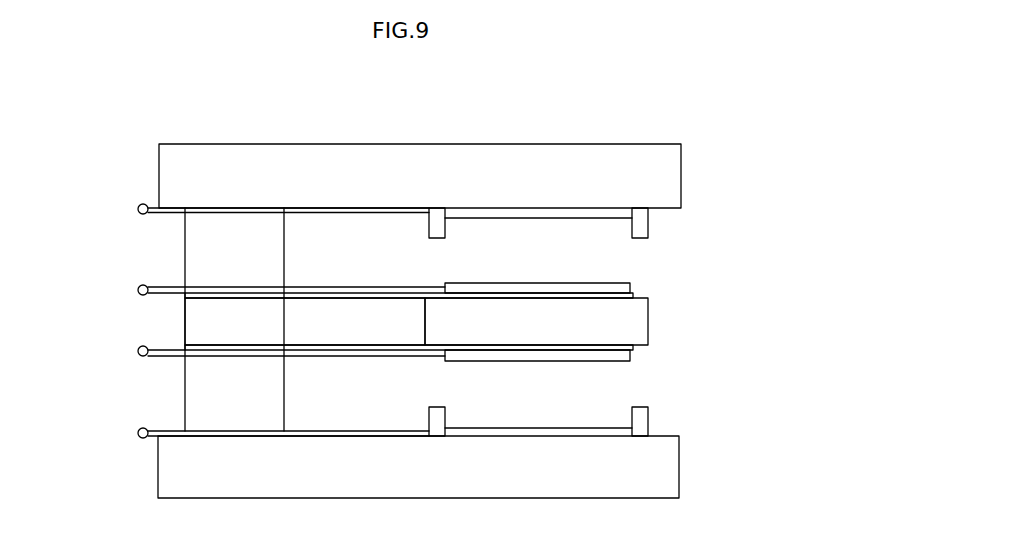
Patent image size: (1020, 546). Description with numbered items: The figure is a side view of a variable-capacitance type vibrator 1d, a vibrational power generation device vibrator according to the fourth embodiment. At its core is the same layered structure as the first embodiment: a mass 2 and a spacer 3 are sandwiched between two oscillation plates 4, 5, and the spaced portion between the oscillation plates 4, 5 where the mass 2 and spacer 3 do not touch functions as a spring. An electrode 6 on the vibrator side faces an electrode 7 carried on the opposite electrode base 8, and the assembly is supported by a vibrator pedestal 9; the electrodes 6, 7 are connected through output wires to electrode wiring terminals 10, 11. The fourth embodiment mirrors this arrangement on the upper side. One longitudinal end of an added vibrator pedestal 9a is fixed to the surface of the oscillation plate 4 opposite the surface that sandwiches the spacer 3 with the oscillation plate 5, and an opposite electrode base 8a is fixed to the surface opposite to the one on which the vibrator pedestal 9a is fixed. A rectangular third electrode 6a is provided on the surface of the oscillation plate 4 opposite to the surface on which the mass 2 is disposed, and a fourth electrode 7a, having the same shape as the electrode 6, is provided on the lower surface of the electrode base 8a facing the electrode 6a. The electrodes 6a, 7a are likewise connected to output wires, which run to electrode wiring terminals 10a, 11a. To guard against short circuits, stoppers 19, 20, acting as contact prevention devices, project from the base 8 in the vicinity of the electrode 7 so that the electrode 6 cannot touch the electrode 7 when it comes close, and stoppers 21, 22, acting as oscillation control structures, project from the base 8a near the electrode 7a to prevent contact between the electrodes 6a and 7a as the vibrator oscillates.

The variable-capacitance type vibrator 1d is at (686, 94).
The opposite electrode base 8a is at (672, 176).
The opposite electrode base 8 is at (670, 465).
The vibrator pedestal 9 is at (184, 398).
The vibrator pedestal 9a is at (184, 255).
The electrode wiring terminal 10 is at (138, 351).
The electrode wiring terminal 10a is at (138, 290).
The electrode wiring terminal 11 is at (138, 433).
The electrode wiring terminal 11a is at (138, 208).
The mass 2 is at (635, 320).
The spacer 3 is at (184, 322).
The oscillation plate 4 is at (633, 297).
The oscillation plate 5 is at (633, 348).
The electrode 6 is at (498, 357).
The third electrode 6a is at (498, 288).
The electrode 7 is at (563, 430).
The fourth electrode 7a is at (566, 212).
The stopper 19 is at (646, 412).
The stopper 20 is at (430, 415).
The stopper 21 is at (646, 227).
The stopper 22 is at (435, 228).